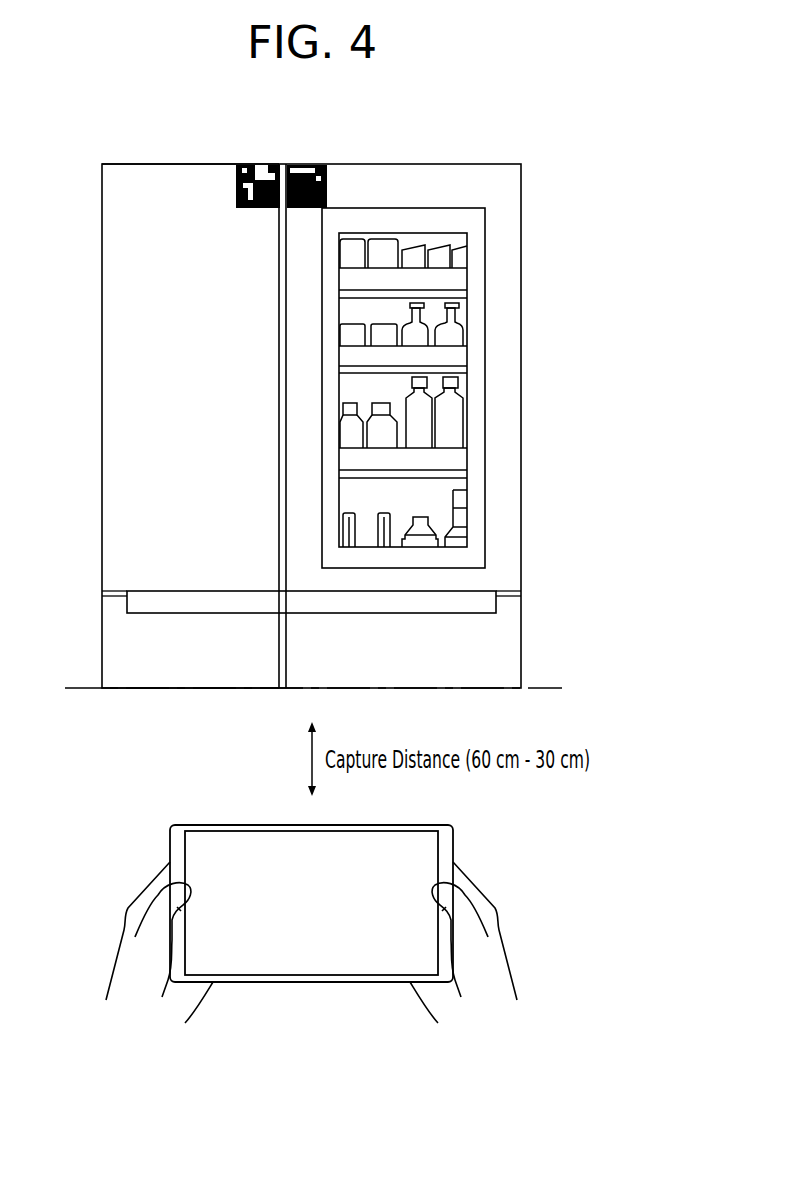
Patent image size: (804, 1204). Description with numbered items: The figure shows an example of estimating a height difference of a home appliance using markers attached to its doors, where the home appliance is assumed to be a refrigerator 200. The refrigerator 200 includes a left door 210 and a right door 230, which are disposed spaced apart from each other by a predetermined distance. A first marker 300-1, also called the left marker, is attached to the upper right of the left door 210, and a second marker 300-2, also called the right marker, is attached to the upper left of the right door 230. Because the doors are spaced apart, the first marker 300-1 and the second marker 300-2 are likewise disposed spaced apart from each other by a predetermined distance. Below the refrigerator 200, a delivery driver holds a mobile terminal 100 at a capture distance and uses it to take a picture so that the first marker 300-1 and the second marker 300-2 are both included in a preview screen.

The mobile terminal 100 is at (303, 982).
The refrigerator 200 is at (100, 290).
The left door 210 is at (165, 173).
The right door 230 is at (408, 173).
The first marker 300-1 is at (257, 162).
The second marker 300-2 is at (315, 162).